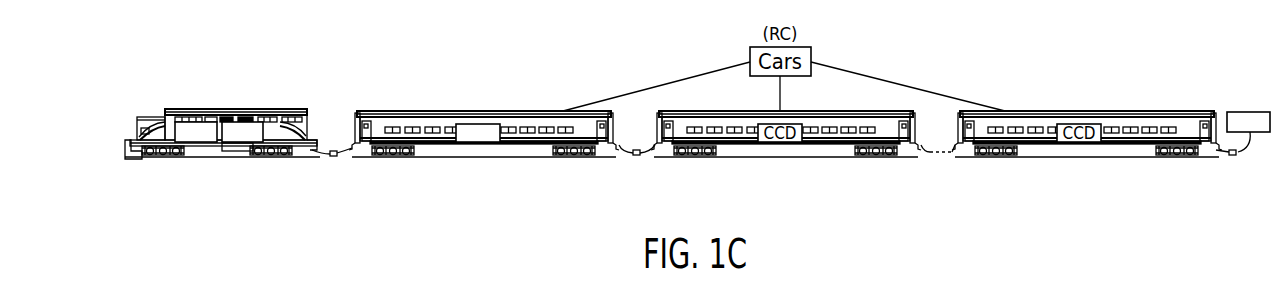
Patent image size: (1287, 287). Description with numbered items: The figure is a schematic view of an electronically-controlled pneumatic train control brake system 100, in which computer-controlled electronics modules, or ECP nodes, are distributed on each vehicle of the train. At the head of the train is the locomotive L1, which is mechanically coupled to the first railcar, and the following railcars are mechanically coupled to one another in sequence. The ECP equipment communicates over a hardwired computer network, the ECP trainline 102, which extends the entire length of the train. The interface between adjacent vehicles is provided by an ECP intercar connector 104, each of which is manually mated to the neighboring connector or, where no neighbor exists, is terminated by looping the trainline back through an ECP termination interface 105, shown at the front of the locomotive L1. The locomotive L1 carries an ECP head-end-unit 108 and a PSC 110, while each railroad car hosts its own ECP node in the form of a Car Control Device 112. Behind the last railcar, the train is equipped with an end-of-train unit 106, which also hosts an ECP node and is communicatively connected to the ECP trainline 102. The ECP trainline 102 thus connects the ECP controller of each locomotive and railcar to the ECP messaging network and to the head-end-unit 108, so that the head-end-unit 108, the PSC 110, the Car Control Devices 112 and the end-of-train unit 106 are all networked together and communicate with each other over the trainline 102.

The ECP train control brake system 100 is at (987, 30).
The ECP trainline 102 is at (783, 145).
The ECP intercar connector 104 is at (336, 155).
The ECP termination interface 105 is at (131, 157).
The end-of-train (EOT) unit 106 is at (1253, 112).
The ECP head-end-unit (HEU) 108 is at (166, 118).
The PSC 110 is at (272, 130).
The Car Control Device (CCD) 112 is at (475, 122).
The locomotive L1 is at (198, 109).